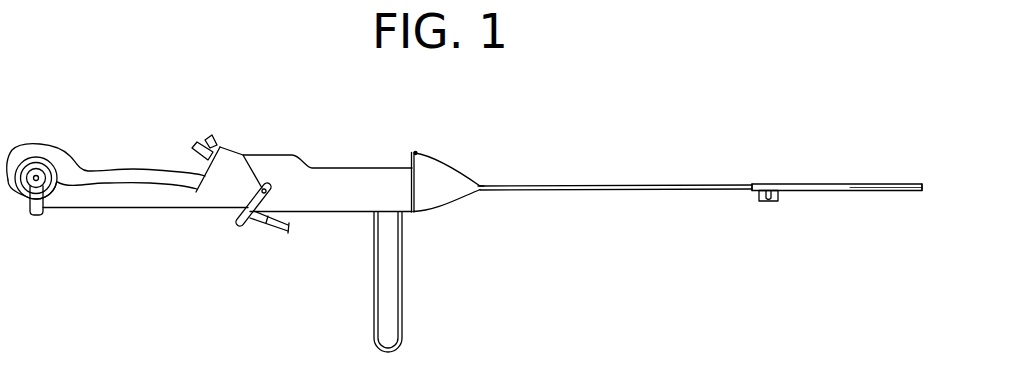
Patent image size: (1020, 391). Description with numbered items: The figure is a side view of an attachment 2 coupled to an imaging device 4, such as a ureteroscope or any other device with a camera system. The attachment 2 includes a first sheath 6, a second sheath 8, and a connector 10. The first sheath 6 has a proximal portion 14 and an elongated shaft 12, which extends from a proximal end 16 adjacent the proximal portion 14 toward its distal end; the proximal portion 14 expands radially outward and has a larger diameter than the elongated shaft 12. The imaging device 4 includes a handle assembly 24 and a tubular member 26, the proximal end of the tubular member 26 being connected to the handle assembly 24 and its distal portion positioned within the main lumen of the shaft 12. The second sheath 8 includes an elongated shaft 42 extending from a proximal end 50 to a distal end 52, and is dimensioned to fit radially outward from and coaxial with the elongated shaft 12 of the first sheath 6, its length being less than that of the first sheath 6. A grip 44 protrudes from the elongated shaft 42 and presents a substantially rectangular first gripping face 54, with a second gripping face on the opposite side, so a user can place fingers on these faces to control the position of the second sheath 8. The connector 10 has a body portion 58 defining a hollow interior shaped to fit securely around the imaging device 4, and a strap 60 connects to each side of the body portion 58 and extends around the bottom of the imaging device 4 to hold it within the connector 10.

The attachment 2 is at (354, 127).
The imaging device 4 is at (94, 124).
The first sheath 6 is at (566, 185).
The second sheath 8 is at (852, 184).
The connector 10 is at (274, 154).
The elongated shaft 12 is at (625, 192).
The proximal portion 14 is at (438, 194).
The proximal end 16 is at (478, 185).
The handle assembly 24 is at (117, 194).
The tubular member 26 is at (374, 318).
The elongated shaft 42 is at (870, 191).
The grip 44 is at (770, 201).
The proximal end 50 is at (753, 184).
The distal end 52 is at (920, 184).
The first gripping face 54 is at (760, 201).
The body portion 58 is at (328, 196).
The strap 60 is at (225, 217).